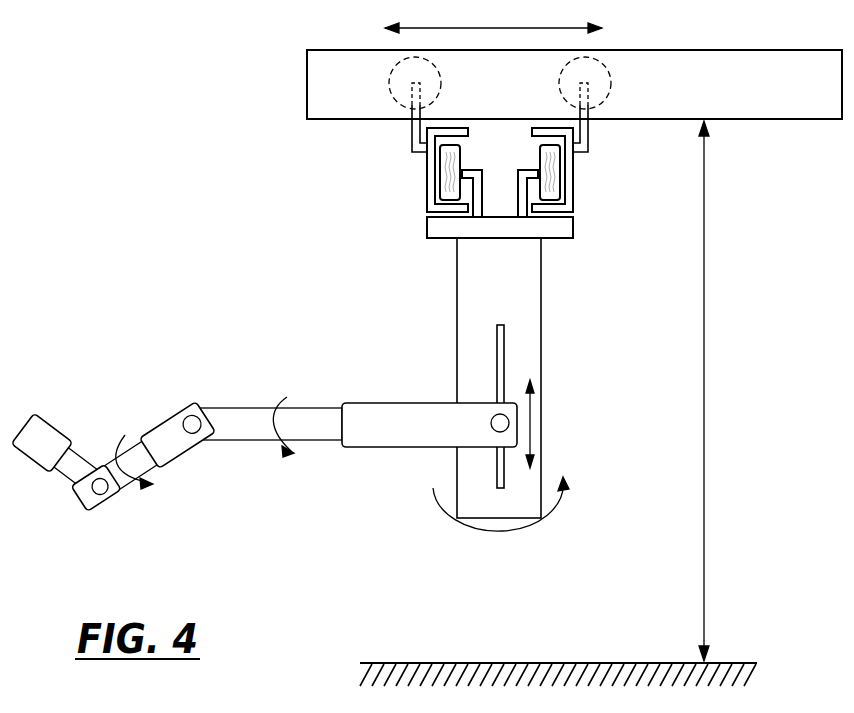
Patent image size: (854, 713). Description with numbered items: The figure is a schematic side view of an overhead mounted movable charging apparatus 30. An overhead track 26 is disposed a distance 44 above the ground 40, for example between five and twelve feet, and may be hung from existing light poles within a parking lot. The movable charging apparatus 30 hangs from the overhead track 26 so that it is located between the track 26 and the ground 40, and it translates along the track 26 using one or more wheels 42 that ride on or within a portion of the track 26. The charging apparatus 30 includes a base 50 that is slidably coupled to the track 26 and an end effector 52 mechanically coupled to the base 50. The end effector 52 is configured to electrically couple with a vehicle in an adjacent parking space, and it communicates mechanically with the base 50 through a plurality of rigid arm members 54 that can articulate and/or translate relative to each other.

The overhead track 26 is at (307, 83).
The wheels 42 is at (388, 77).
The movable charging apparatus 30 is at (332, 324).
The base 50 is at (457, 278).
The rigid arm members 54 is at (264, 447).
The end effector 52 is at (43, 420).
The distance 44 is at (704, 378).
The ground 40 is at (745, 662).